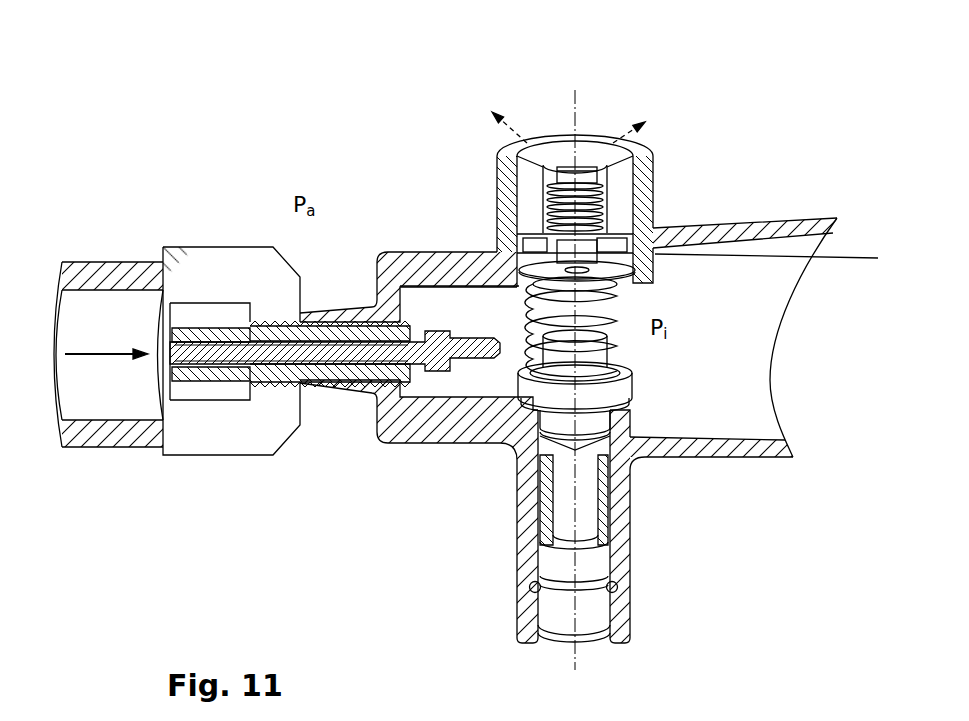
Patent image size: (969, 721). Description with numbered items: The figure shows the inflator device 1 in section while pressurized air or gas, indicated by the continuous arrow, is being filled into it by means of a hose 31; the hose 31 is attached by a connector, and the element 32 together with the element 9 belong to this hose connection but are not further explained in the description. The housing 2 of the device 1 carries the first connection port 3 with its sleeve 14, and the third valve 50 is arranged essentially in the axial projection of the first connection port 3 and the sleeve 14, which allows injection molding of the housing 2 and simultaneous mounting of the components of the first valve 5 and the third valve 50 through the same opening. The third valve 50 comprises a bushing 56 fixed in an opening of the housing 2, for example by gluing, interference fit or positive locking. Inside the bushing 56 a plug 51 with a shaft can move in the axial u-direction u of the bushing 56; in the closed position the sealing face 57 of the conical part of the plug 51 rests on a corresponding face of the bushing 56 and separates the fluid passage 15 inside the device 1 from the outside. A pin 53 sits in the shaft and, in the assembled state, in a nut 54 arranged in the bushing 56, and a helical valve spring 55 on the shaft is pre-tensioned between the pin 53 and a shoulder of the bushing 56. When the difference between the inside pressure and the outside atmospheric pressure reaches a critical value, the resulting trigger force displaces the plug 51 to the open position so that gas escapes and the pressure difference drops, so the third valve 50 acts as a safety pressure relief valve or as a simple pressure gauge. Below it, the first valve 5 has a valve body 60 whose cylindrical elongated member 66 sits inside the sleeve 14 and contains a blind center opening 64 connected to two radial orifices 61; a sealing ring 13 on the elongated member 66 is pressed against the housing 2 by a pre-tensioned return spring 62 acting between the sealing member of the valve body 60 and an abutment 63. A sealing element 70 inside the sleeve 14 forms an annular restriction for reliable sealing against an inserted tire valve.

The device 1 is at (282, 112).
The housing 2 is at (450, 258).
The first connection port 3 is at (520, 633).
The first valve 5 is at (659, 376).
The inlet sleeve 9 is at (213, 377).
The sealing ring 13 is at (633, 402).
The sleeve 14 is at (630, 568).
The fluid passage 15 is at (713, 316).
The hose 31 is at (90, 262).
The union nut 32 is at (217, 257).
The third valve 50 is at (500, 175).
The plug 51 is at (593, 147).
The pin 53 is at (625, 240).
The nut 54 is at (617, 258).
The valve spring 55 is at (540, 157).
The bushing 56 is at (657, 173).
The sealing face 57 is at (613, 167).
The valve body 60 is at (506, 394).
The orifices 61 is at (520, 455).
The return spring 62 is at (570, 303).
The abutment 63 is at (815, 220).
The center opening 64 is at (553, 508).
The elongated member 66 is at (580, 498).
The sealing element 70 is at (593, 583).
The u-direction u is at (573, 667).